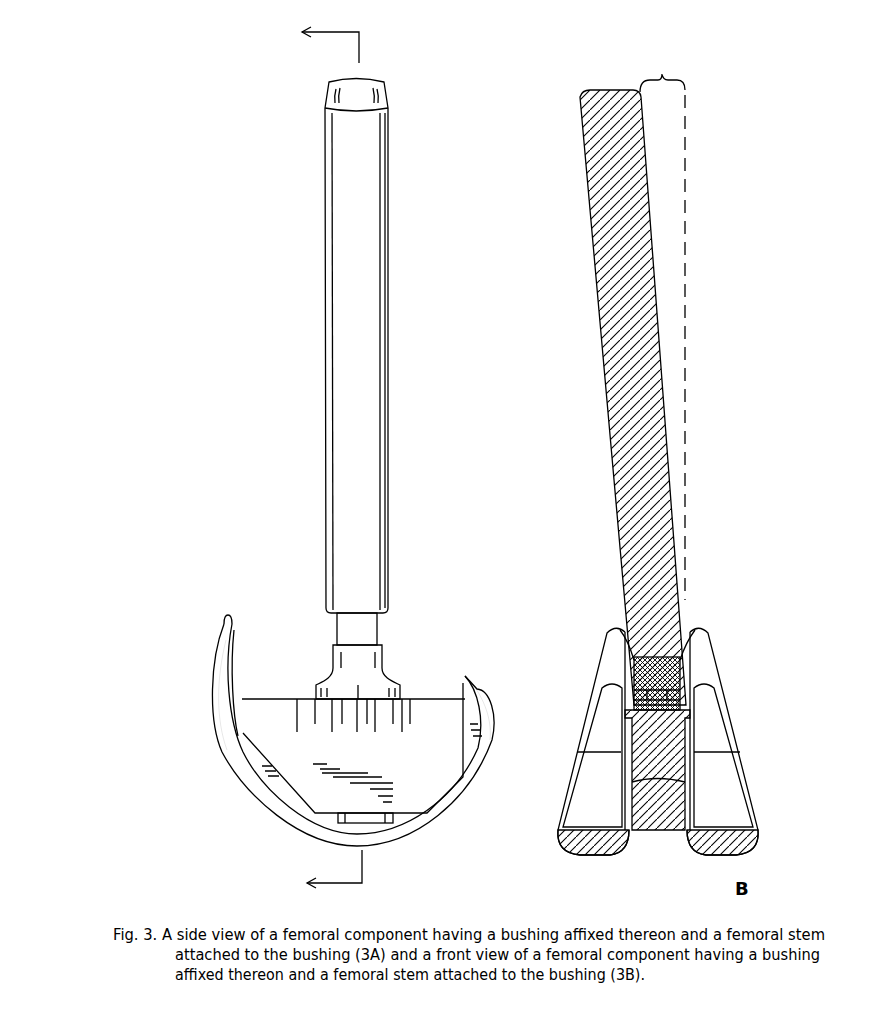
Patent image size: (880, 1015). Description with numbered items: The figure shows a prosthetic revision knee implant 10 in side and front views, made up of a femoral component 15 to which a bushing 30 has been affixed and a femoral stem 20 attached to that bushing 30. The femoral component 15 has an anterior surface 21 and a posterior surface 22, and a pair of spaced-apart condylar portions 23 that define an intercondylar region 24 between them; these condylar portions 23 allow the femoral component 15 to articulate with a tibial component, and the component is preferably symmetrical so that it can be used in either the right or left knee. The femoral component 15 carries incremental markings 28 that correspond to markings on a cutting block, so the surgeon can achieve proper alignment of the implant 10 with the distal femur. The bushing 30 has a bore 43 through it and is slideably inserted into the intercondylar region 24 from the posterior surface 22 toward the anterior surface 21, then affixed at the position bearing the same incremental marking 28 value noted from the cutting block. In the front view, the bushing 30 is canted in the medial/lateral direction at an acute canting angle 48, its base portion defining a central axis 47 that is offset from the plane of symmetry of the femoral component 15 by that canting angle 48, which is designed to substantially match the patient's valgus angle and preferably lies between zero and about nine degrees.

In FIG. 3A, the prosthetic revision knee implant 10 is at (230, 390).
In FIG. 3A, the femoral component 15 is at (398, 760).
In FIG. 3B, the femoral component 15 is at (713, 727).
In FIG. 3A, the femoral stem 20 is at (347, 318).
In FIG. 3B, the femoral stem 20 is at (655, 350).
In FIG. 3A, the anterior surface 21 is at (221, 645).
In FIG. 3A, the posterior surface 22 is at (488, 698).
In FIG. 3B, the condylar portions 23 is at (573, 805).
In FIG. 3B, the intercondylar region 24 is at (657, 785).
In FIG. 3A, the incremental markings 28 is at (303, 720).
In FIG. 3A, the bushing 30 is at (345, 668).
In FIG. 3B, the bushing 30 is at (635, 677).
In FIG. 3B, the bore 43 is at (680, 650).
In FIG. 3B, the central axis 47 is at (685, 135).
In FIG. 3B, the canting angle 48 is at (662, 68).